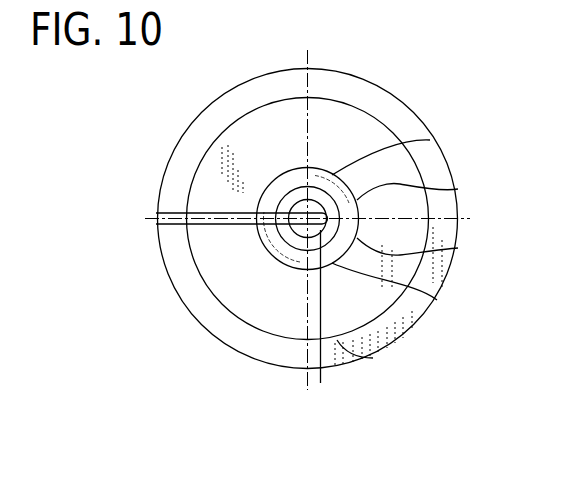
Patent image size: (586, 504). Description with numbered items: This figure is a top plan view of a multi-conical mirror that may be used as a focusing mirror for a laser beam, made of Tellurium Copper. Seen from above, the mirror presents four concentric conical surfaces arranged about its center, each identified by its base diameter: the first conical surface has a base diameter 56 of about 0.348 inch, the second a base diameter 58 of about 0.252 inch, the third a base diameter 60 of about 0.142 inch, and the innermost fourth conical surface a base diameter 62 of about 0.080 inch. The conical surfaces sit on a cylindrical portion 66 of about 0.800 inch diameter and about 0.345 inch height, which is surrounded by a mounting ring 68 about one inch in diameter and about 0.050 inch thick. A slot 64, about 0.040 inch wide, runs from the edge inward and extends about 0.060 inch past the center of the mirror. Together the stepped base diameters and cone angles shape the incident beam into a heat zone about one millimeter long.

The mounting ring 68 is at (355, 73).
The base diameter of fourth conical surface 62 is at (430, 140).
The base diameter of first conical surface 56 is at (458, 189).
The base diameter of second conical surface 58 is at (458, 248).
The base diameter of third conical surface 60 is at (437, 300).
The cylindrical portion 66 is at (373, 358).
The slot 64 is at (201, 225).